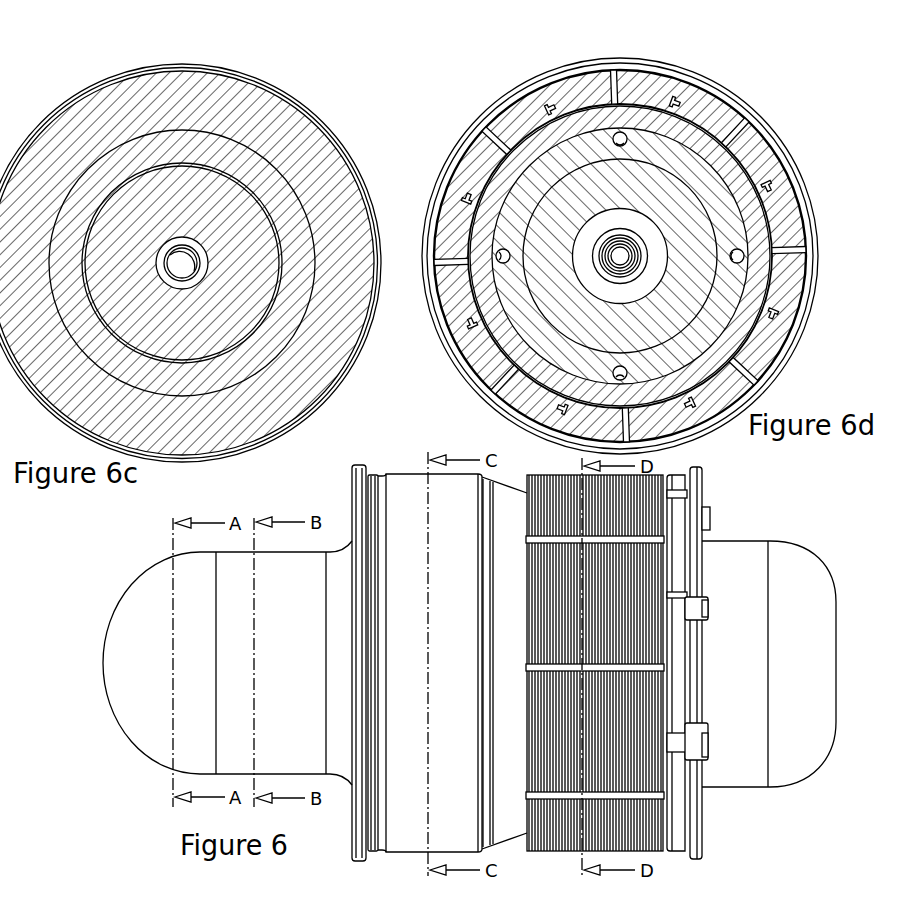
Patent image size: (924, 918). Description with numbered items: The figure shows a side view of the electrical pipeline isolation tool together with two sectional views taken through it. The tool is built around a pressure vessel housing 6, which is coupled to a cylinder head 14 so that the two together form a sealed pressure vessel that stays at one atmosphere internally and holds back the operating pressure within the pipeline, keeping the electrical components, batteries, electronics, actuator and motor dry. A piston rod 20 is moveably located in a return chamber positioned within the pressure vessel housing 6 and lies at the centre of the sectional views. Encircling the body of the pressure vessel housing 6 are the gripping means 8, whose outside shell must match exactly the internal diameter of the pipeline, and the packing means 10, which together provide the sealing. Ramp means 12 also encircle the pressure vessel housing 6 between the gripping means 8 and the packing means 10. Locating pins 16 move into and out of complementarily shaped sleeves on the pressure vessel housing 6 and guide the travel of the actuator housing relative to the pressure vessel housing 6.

In FIG. 6C, the pressure vessel housing 6 is at (204, 263).
In FIG. 6D, the pressure vessel housing 6 is at (620, 255).
In FIG. 6D, the gripping means 8 is at (623, 256).
In FIG. 6C, the packing means 10 is at (231, 257).
In FIG. 6D, the ramp means 12 is at (668, 245).
In FIG. 6D, the cylinder head 14 is at (662, 255).
In FIG. 6D, the locating pins 16 is at (681, 256).
In FIG. 6C, the piston rod 20 is at (276, 184).
In FIG. 6D, the piston rod 20 is at (720, 258).